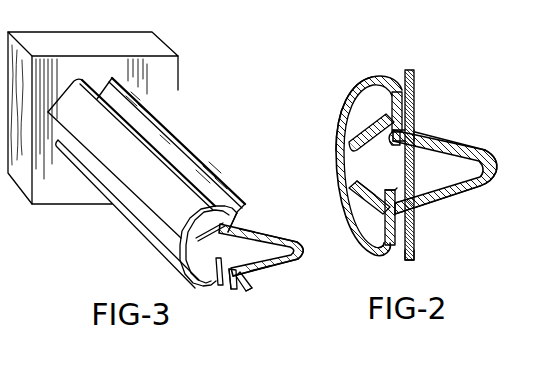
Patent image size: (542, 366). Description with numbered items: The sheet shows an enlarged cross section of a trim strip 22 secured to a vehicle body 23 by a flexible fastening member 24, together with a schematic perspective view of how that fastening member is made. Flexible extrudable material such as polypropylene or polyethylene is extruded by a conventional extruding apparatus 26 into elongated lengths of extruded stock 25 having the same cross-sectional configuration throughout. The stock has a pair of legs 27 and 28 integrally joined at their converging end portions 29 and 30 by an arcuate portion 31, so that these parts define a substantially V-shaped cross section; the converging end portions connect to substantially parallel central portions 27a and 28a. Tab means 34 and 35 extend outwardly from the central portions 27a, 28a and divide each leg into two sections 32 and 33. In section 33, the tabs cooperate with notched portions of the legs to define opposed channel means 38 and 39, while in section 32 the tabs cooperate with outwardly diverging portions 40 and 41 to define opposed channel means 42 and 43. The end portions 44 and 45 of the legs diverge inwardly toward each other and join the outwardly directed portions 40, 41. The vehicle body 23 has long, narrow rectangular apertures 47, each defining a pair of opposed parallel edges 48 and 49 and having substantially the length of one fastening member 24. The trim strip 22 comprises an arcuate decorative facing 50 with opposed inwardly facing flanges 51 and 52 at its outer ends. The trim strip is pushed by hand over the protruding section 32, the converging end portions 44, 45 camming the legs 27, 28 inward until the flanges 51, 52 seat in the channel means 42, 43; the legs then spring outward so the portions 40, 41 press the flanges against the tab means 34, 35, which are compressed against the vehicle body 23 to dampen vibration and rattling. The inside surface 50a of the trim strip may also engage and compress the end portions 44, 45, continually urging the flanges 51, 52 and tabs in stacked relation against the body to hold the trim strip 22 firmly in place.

In FIG. 2, the trim strip 22 is at (343, 112).
In FIG. 2, the vehicle body 23 is at (418, 82).
In FIG. 2, the fastening member 24 is at (448, 135).
In FIG. 3, the extruded stock 25 is at (218, 118).
In FIG. 3, the extruding apparatus 26 is at (173, 78).
In FIG. 3, the leg 27 is at (262, 220).
In FIG. 3, the central portion 27a is at (258, 217).
In FIG. 3, the leg 28 is at (263, 275).
In FIG. 3, the central portion 28a is at (257, 283).
In FIG. 3, the converging end portion 29 is at (287, 242).
In FIG. 3, the converging end portion 30 is at (297, 262).
In FIG. 3, the arcuate portion 31 is at (303, 250).
In FIG. 2, the arcuate portion 31 is at (490, 157).
In FIG. 2, the section 32 is at (372, 220).
In FIG. 2, the section 33 is at (468, 212).
In FIG. 3, the tab means 34 is at (180, 147).
In FIG. 2, the tab means 34 is at (410, 120).
In FIG. 3, the tab means 35 is at (253, 300).
In FIG. 2, the tab means 35 is at (412, 237).
In FIG. 3, the channel means 38 is at (252, 213).
In FIG. 3, the channel means 39 is at (250, 290).
In FIG. 3, the outwardly diverging portion 40 is at (230, 210).
In FIG. 2, the outwardly diverging portion 40 is at (387, 143).
In FIG. 3, the outwardly diverging portion 41 is at (227, 300).
In FIG. 2, the outwardly diverging portion 41 is at (382, 188).
In FIG. 3, the channel means 42 is at (248, 212).
In FIG. 2, the channel means 42 is at (395, 142).
In FIG. 3, the channel means 43 is at (235, 295).
In FIG. 2, the channel means 43 is at (397, 188).
In FIG. 3, the end portion 44 is at (180, 232).
In FIG. 2, the end portion 44 is at (358, 148).
In FIG. 3, the end portion 45 is at (188, 282).
In FIG. 2, the end portion 45 is at (360, 175).
In FIG. 2, the aperture 47 is at (402, 147).
In FIG. 2, the edge 48 is at (412, 125).
In FIG. 2, the edge 49 is at (410, 208).
In FIG. 2, the facing 50 is at (343, 115).
In FIG. 2, the inside surface 50a is at (353, 127).
In FIG. 2, the flange 51 is at (390, 117).
In FIG. 2, the flange 52 is at (392, 233).